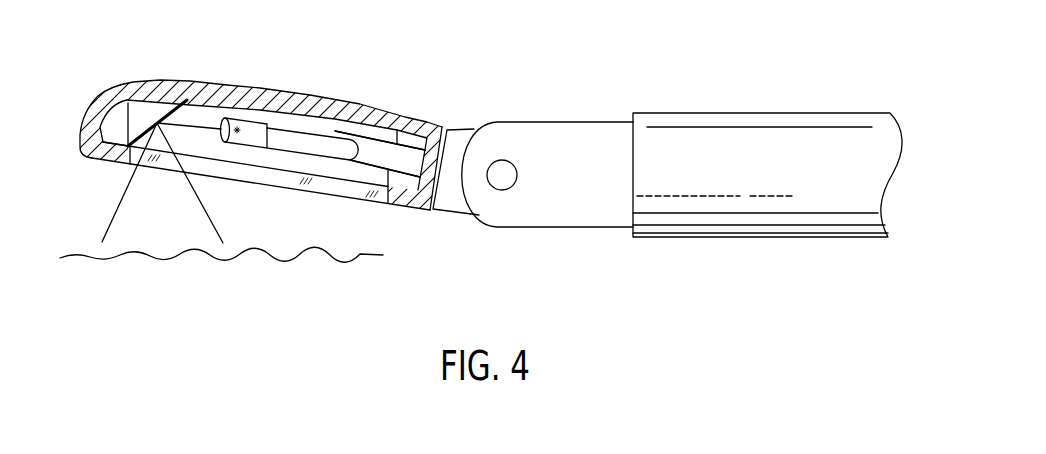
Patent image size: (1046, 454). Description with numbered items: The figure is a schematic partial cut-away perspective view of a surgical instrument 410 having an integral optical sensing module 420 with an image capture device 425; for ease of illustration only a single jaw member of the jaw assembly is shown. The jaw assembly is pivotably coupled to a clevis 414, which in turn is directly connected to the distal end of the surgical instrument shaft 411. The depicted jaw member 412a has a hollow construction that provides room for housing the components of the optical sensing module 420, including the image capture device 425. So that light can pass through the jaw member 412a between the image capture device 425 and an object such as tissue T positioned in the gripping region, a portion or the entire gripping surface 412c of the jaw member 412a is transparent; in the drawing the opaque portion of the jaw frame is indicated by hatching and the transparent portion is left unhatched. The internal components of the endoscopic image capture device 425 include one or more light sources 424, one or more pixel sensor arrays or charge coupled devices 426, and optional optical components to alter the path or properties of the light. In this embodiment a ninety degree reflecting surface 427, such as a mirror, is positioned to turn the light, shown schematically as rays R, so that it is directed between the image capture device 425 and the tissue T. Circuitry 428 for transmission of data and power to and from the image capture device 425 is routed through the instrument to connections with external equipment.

The surgical instrument 410 is at (841, 268).
The surgical instrument shaft 411 is at (798, 113).
The jaw member 412a is at (232, 84).
The gripping surface 412c is at (317, 193).
The clevis 414 is at (568, 228).
The optical sensing module 420 is at (329, 166).
The light source 424 is at (238, 143).
The image capture device 425 is at (328, 138).
The pixel sensor array 426 is at (268, 138).
The reflecting surface 427 is at (142, 108).
The circuitry 428 is at (407, 123).
The rays R is at (195, 122).
The tissue T is at (98, 260).